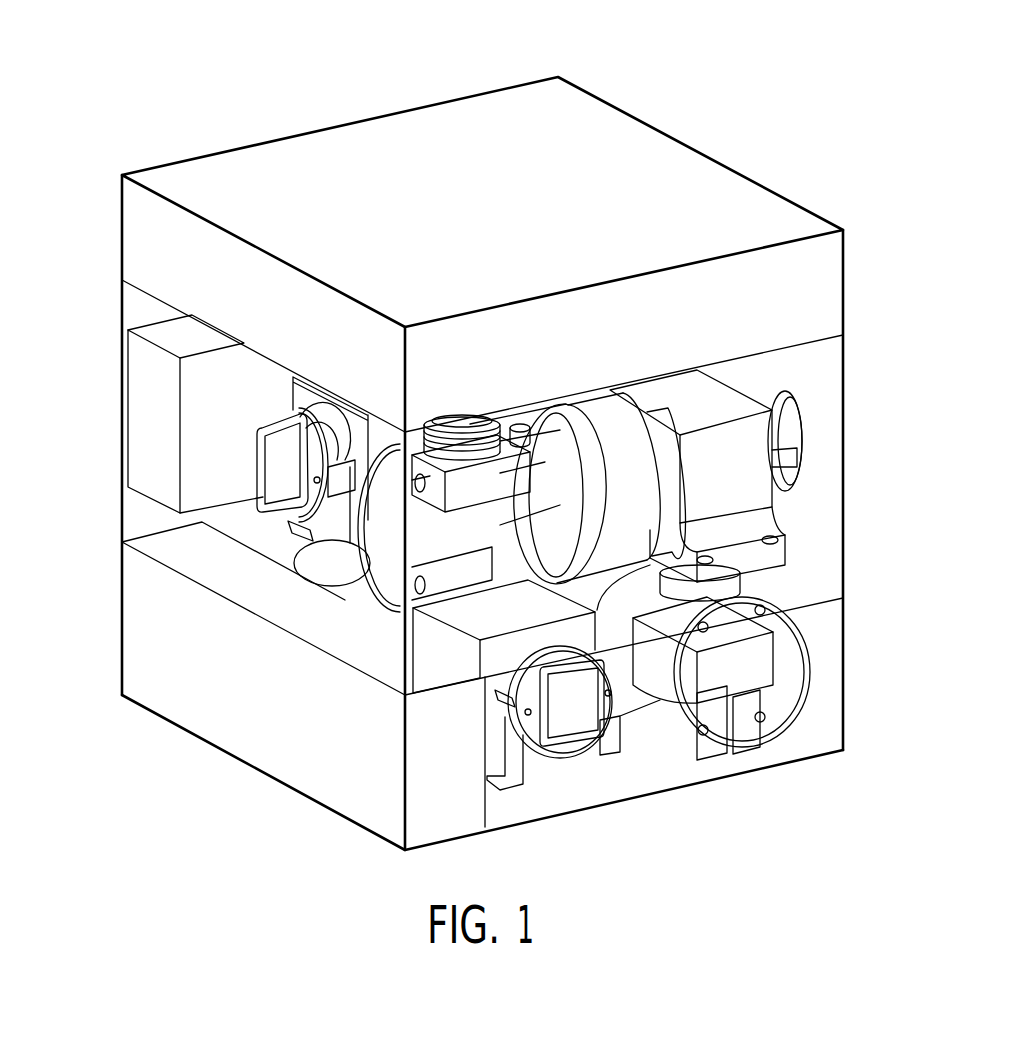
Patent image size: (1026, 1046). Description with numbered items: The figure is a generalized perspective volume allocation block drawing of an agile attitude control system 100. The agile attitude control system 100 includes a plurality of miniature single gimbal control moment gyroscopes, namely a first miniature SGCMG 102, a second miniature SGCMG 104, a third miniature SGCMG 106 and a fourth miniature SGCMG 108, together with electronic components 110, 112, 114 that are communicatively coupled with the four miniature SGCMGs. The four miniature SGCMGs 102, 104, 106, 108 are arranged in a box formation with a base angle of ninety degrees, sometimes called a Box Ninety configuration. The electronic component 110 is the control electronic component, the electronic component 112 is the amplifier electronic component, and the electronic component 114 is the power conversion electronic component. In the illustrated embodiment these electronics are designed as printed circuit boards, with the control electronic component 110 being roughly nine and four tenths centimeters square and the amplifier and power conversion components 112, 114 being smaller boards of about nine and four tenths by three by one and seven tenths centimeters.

The agile attitude control system 100 is at (536, 451).
The miniature SGCMG 102 is at (772, 462).
The miniature SGCMG 104 is at (810, 654).
The miniature SGCMG 106 is at (422, 638).
The miniature SGCMG 108 is at (295, 405).
The electronic component 110 is at (638, 130).
The electronic component 112 is at (136, 658).
The electronic component 114 is at (132, 350).